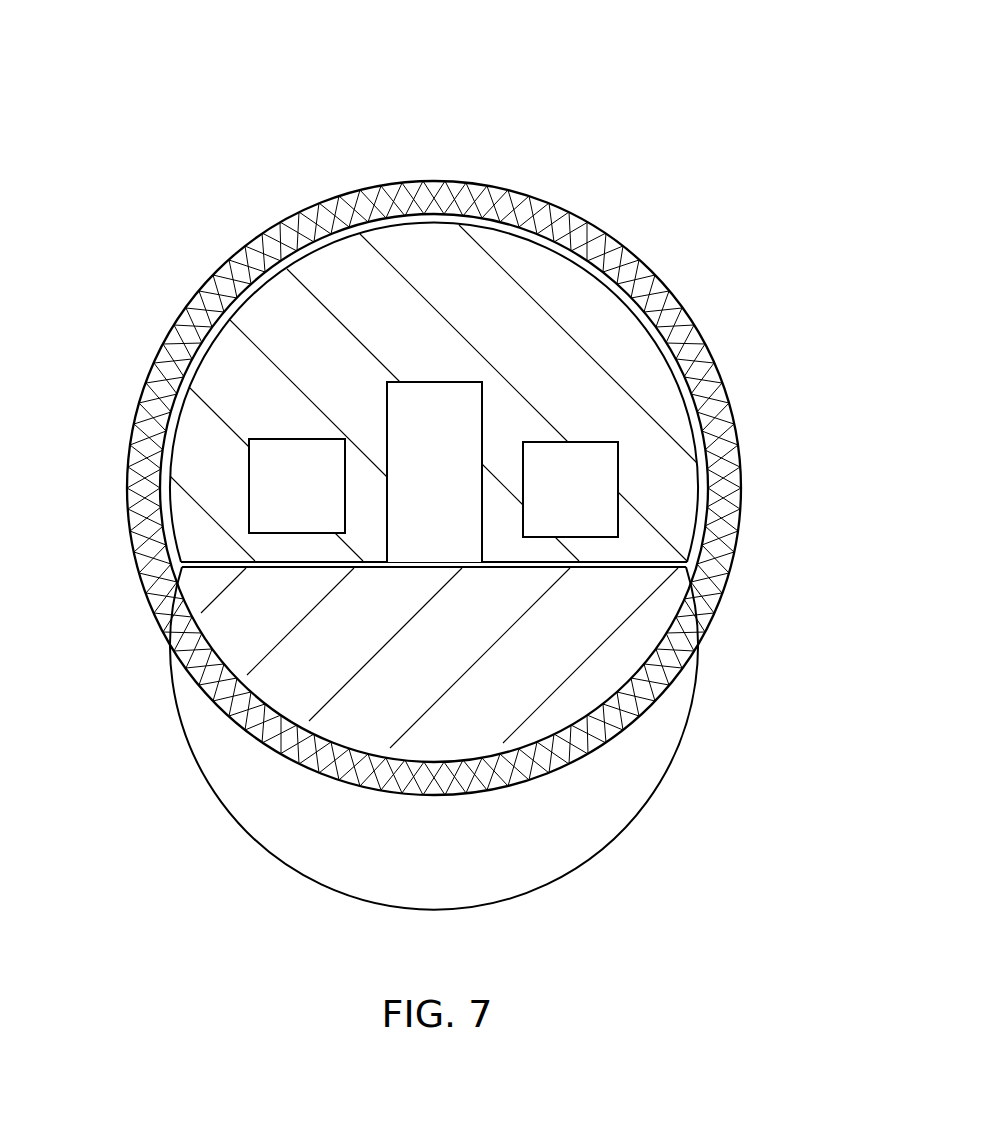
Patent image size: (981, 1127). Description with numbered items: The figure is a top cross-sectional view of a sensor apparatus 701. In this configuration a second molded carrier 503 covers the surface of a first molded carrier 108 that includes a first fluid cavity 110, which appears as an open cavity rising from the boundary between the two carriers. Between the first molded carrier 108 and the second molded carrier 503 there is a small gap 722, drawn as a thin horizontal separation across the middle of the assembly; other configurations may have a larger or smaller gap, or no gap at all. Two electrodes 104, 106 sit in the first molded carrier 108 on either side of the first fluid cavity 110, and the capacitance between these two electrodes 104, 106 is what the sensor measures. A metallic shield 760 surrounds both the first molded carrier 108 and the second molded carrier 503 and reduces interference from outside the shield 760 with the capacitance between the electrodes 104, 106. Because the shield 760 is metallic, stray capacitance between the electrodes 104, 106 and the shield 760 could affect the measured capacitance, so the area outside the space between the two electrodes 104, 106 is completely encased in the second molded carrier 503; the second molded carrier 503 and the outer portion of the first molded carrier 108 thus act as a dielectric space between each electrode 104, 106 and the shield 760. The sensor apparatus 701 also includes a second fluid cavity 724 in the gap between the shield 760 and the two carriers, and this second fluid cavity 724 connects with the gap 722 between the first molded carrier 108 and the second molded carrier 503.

The sensor apparatus 701 is at (156, 146).
The metallic shield 760 is at (417, 798).
The second fluid cavity 724 is at (523, 745).
The first molded carrier 108 is at (604, 319).
The second molded carrier 503 is at (591, 666).
The gap 722 is at (268, 569).
The electrode 104 is at (297, 486).
The electrode 106 is at (570, 489).
The first fluid cavity 110 is at (425, 407).